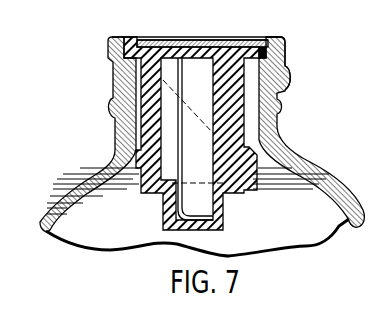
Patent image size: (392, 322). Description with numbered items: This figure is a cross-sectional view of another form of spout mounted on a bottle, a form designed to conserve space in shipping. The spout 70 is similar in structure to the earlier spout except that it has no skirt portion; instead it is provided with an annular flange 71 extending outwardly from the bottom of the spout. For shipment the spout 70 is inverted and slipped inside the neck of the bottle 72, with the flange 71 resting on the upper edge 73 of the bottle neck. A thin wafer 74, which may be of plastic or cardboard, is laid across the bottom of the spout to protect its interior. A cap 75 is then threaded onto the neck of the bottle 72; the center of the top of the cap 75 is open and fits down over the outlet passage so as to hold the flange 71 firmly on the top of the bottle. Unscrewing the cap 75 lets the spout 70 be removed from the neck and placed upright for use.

The spout 70 is at (243, 120).
The annular flange 71 is at (258, 48).
The bottle 72 is at (340, 210).
The upper edge 73 is at (285, 50).
The thin wafer 74 is at (184, 41).
The cap 75 is at (289, 78).